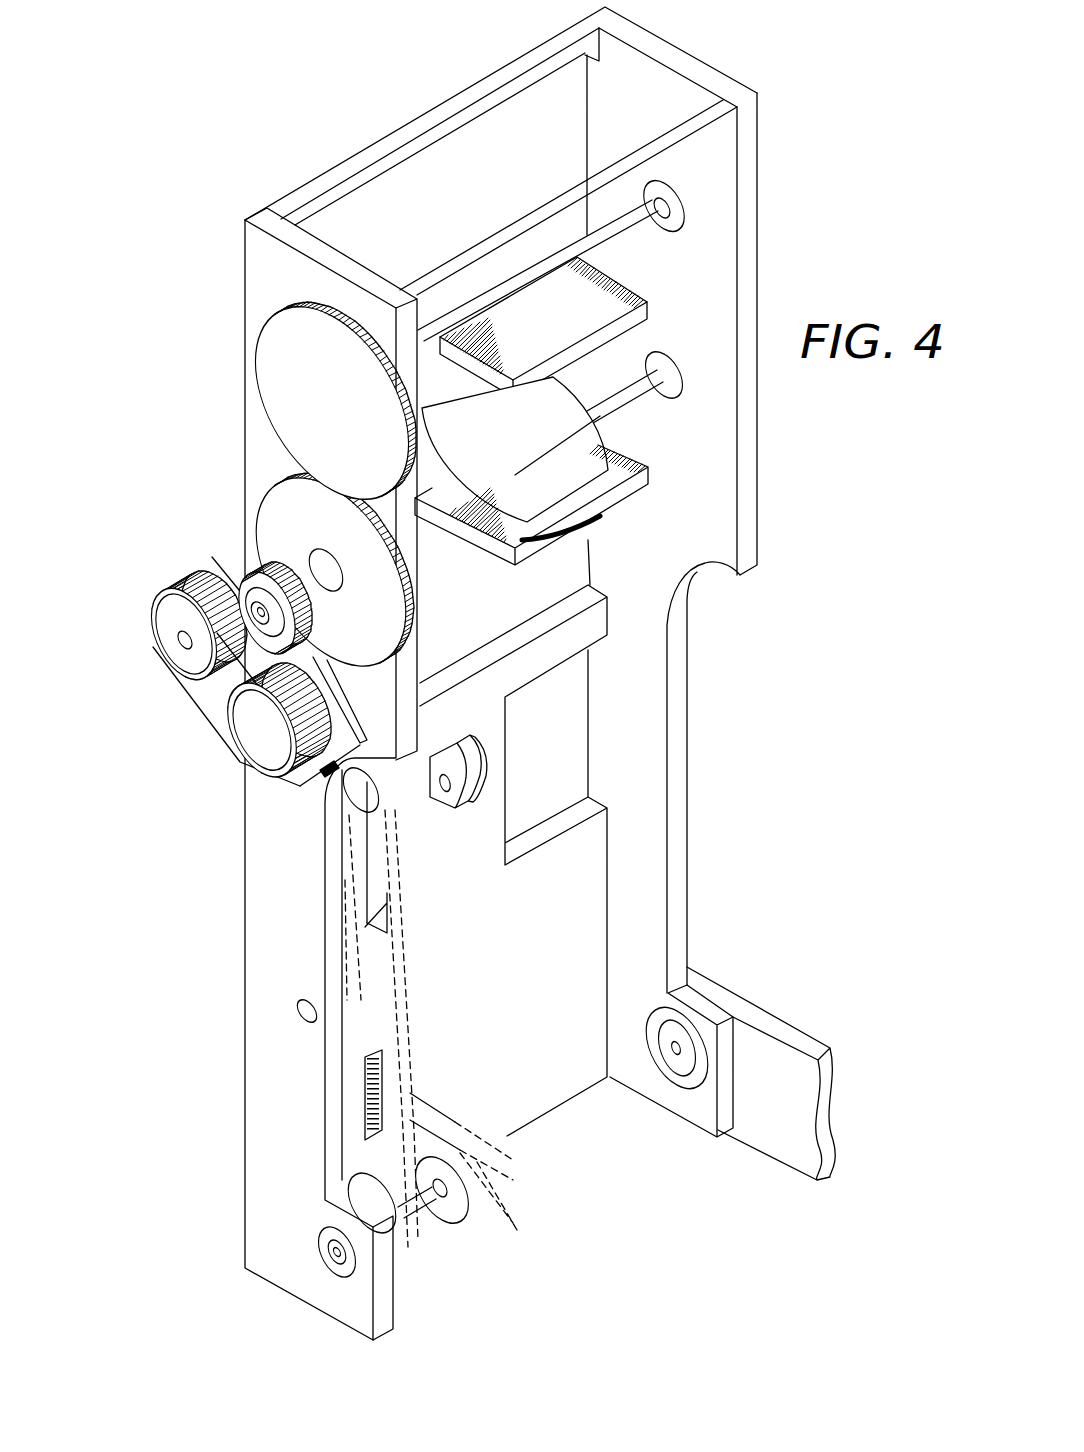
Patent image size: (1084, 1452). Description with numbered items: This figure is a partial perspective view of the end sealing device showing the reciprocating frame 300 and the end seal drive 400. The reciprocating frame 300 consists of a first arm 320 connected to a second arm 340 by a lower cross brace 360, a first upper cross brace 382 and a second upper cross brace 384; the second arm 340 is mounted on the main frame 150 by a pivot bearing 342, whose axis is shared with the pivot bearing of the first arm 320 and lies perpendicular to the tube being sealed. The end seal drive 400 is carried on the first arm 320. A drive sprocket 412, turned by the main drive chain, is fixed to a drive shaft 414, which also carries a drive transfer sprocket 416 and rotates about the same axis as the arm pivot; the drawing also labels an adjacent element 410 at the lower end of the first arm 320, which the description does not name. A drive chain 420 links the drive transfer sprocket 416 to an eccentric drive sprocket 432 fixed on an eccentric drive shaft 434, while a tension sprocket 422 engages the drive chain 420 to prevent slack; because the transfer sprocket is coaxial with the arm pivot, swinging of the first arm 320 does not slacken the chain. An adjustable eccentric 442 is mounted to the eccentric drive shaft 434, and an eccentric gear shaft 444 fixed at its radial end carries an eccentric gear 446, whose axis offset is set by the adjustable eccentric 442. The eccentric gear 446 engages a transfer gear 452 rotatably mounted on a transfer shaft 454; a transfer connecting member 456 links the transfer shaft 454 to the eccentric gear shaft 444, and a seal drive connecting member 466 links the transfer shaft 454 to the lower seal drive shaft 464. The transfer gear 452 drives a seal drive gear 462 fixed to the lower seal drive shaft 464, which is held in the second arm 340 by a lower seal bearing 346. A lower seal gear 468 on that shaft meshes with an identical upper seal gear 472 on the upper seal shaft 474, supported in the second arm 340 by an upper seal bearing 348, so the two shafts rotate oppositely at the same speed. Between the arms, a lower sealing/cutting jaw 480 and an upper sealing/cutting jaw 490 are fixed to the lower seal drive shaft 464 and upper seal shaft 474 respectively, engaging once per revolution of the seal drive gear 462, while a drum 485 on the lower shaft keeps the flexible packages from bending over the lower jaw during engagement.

The reciprocating frame 300 is at (345, 86).
The second upper cross brace 384 is at (525, 60).
The second arm 340 is at (664, 46).
The first upper cross brace 382 is at (677, 138).
The first arm 320 is at (250, 250).
The upper seal bearing 348 is at (674, 194).
The upper seal shaft 474 is at (620, 238).
The upper sealing/cutting jaw 490 is at (635, 284).
The lower seal bearing 346 is at (666, 358).
The lower seal drive shaft 464 is at (638, 395).
The drum 485 is at (596, 460).
The lower sealing/cutting jaw 480 is at (630, 485).
The upper seal gear 472 is at (268, 368).
The lower seal gear 468 is at (265, 521).
The seal drive gear 462 is at (284, 572).
The seal drive connecting member 466 is at (212, 566).
The transfer gear 452 is at (160, 588).
The transfer shaft 454 is at (175, 637).
The end seal drive 400 is at (145, 696).
The transfer connecting member 456 is at (212, 706).
The eccentric gear shaft 444 is at (250, 740).
The eccentric gear 446 is at (292, 708).
The adjustable eccentric 442 is at (340, 731).
The eccentric drive shaft 434 is at (304, 788).
The eccentric drive sprocket 432 is at (380, 783).
The lower cross brace 360 is at (590, 638).
The pivot bearing 342 is at (683, 1080).
The main frame 150 is at (777, 1023).
The drive chain 420 is at (403, 980).
The tension sprocket 422 is at (363, 1017).
The drive transfer sprocket 416 is at (363, 1193).
The drive sprocket 412 is at (447, 1216).
The drive shaft 414 is at (320, 1238).
The bearing 410 is at (318, 1251).